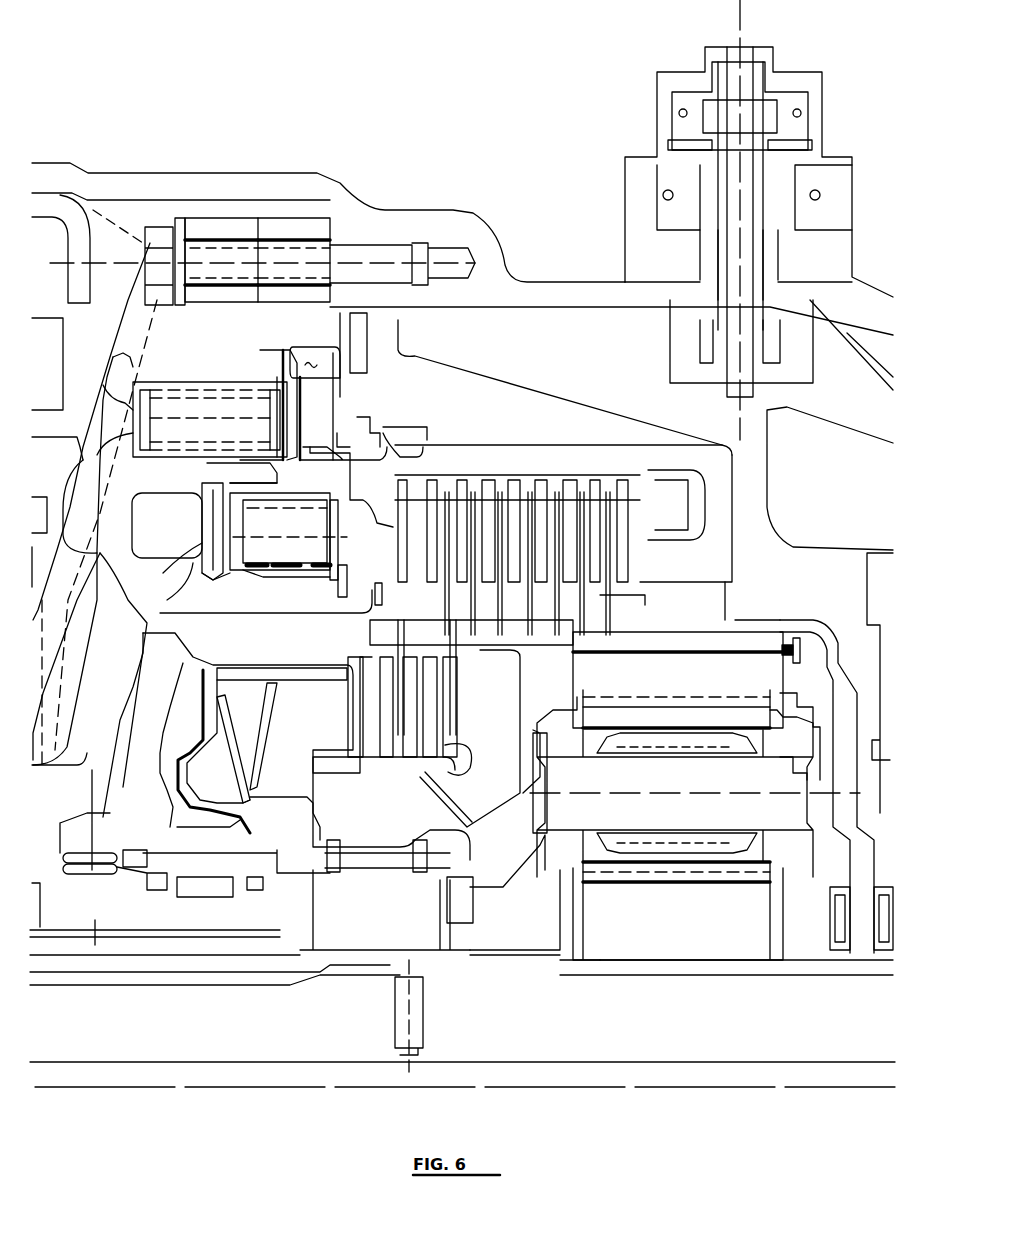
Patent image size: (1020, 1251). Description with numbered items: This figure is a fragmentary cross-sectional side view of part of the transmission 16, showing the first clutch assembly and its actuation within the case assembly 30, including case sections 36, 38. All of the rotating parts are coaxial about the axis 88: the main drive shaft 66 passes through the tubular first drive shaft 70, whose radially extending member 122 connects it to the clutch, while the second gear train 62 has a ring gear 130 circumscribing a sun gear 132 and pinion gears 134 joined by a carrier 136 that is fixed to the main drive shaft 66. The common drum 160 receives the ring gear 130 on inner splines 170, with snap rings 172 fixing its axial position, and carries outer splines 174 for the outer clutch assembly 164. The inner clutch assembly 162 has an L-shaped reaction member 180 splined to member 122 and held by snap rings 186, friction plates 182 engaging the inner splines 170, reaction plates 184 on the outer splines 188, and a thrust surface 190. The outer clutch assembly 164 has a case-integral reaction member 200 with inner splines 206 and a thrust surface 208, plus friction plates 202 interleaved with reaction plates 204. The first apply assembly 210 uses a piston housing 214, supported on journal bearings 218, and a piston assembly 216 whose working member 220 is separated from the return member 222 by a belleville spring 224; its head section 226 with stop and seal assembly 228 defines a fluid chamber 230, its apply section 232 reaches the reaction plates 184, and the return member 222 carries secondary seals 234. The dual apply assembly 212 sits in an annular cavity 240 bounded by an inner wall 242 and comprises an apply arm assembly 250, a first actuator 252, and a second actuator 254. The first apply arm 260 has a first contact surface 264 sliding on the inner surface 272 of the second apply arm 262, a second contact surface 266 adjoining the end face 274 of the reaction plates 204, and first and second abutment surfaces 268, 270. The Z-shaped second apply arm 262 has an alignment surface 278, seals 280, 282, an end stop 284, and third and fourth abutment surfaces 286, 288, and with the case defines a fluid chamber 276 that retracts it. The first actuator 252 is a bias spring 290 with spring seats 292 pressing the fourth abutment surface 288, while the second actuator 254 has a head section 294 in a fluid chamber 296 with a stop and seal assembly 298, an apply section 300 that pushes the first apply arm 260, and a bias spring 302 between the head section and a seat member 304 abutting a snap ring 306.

The transmission 16 is at (180, 47).
The case assembly 30 is at (112, 168).
The case section 36 is at (226, 218).
The case section 38 is at (293, 218).
The second gear train 62 is at (725, 622).
The main drive shaft 66 is at (262, 1039).
The first drive shaft 70 is at (228, 962).
The axis 88 is at (780, 1087).
The radially extending member 122 is at (387, 916).
The ring gear 130 is at (700, 672).
The sun gear 132 is at (685, 932).
The pinion gears 134 is at (635, 720).
The carrier 136 is at (530, 922).
The common drum 160 is at (793, 630).
The inner clutch assembly 162 is at (476, 825).
The outer clutch assembly 164 is at (735, 521).
The inner splines 170 is at (503, 652).
The snap rings 172 is at (808, 658).
The outer splines 174 is at (737, 620).
The reaction member 180 is at (390, 809).
The friction plates 182 is at (410, 690).
The reaction plates 184 is at (440, 692).
The snap rings 186 is at (460, 848).
The outer splines 188 is at (336, 765).
The thrust surface 190 is at (453, 760).
The reaction member 200 is at (714, 494).
The friction plates 202 is at (618, 603).
The reaction plates 204 is at (623, 528).
The inner splines 206 is at (560, 477).
The thrust surface 208 is at (600, 476).
The first apply assembly 210 is at (120, 796).
The dual apply assembly 212 is at (455, 364).
The piston housing 214 is at (127, 870).
The piston assembly 216 is at (258, 662).
The journal bearings 218 is at (92, 853).
The working member 220 is at (182, 780).
The return member 222 is at (268, 757).
The belleville spring 224 is at (233, 728).
The head section 226 is at (170, 827).
The stop and seal assembly 228 is at (157, 800).
The fluid chamber 230 is at (192, 742).
The apply section 232 is at (317, 665).
The secondary seals 234 is at (263, 695).
The annular cavity 240 is at (310, 363).
The inner wall 242 is at (398, 490).
The apply arm assembly 250 is at (227, 463).
The first actuator 252 is at (80, 460).
The second actuator 254 is at (207, 508).
The first apply arm 260 is at (390, 528).
The second apply arm 262 is at (343, 393).
The first contact surface 264 is at (340, 457).
The second contact surface 266 is at (398, 548).
The first abutment surface 268 is at (273, 430).
The second abutment surface 270 is at (337, 532).
The inner surface 272 is at (380, 445).
The end face 274 is at (382, 575).
The fluid chamber 276 is at (332, 408).
The alignment surface 278 is at (313, 440).
The seal 280 is at (345, 462).
The seal 282 is at (290, 350).
The end stop 284 is at (255, 350).
The third abutment surface 286 is at (317, 515).
The fourth abutment surface 288 is at (267, 410).
The bias spring 290 is at (113, 355).
The spring seats 292 is at (103, 386).
The head section 294 is at (193, 563).
The fluid chamber 296 is at (181, 544).
The stop and seal assembly 298 is at (202, 545).
The apply section 300 is at (273, 472).
The bias spring 302 is at (292, 577).
The seat member 304 is at (323, 573).
The snap ring 306 is at (345, 563).